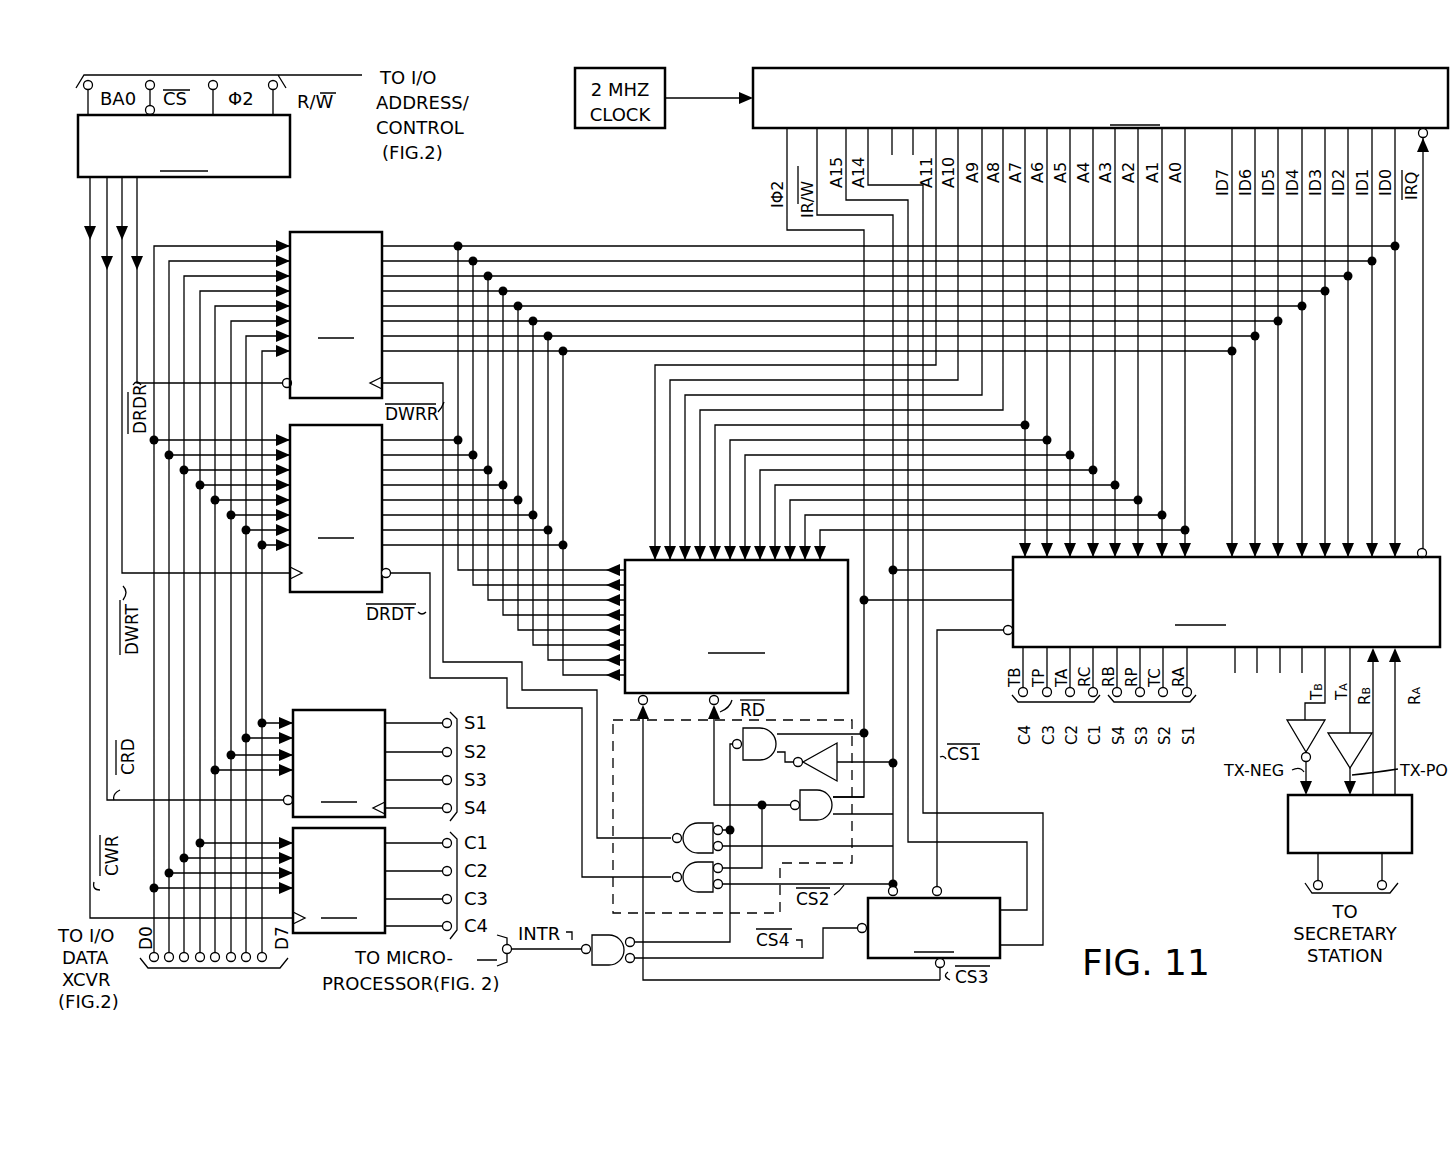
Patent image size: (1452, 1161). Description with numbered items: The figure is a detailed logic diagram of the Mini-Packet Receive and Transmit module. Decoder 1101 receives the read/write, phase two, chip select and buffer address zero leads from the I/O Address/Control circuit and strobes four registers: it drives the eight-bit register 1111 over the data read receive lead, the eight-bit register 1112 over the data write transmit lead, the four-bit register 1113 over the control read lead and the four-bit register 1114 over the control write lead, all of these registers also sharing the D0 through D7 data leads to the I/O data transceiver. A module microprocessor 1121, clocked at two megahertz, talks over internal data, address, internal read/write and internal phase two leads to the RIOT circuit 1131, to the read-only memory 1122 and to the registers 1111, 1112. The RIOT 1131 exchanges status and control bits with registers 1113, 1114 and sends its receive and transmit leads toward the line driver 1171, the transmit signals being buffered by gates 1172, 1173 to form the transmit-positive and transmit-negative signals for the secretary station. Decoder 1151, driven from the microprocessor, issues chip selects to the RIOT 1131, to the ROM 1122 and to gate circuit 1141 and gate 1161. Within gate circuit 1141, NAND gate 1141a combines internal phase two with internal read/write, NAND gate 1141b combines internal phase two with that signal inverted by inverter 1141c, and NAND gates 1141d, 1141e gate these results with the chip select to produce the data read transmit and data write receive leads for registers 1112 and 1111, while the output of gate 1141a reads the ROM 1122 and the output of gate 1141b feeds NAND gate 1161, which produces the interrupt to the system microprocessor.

The decoder 1101 is at (184, 146).
The 8-bit register 1111 is at (336, 315).
The 8-bit register 1112 is at (336, 508).
The 4-bit register 1113 is at (339, 763).
The 4-bit register 1114 is at (339, 880).
The microprocessor 1121 is at (1100, 98).
The read-only memory (ROM) 1122 is at (736, 626).
The RIOT circuit 1131 is at (1226, 602).
The gate circuit 1141 is at (698, 773).
The NAND gate 1141a is at (808, 817).
The NAND gate 1141b is at (759, 757).
The inverter 1141c is at (812, 755).
The NAND gate 1141d is at (708, 888).
The NAND gate 1141e is at (706, 816).
The decoder 1151 is at (934, 928).
The NAND gate 1161 is at (592, 964).
The line driver 1171 is at (1286, 818).
The gate 1172 is at (1364, 746).
The gate 1173 is at (1284, 739).